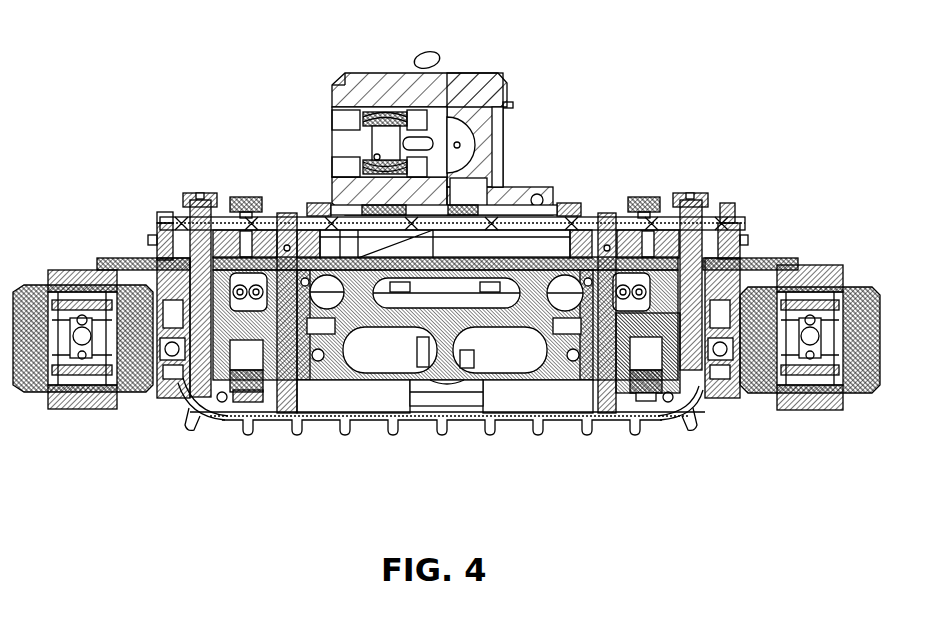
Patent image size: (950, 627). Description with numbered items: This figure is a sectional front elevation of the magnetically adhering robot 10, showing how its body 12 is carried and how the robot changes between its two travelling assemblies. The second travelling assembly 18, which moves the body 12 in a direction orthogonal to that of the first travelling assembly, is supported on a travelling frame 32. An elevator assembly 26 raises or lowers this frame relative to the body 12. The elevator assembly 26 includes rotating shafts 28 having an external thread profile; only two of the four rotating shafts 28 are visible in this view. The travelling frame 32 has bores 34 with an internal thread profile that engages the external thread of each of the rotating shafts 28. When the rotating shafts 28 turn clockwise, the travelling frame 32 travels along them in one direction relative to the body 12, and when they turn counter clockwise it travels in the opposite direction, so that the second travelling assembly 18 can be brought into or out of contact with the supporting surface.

The magnetically adhering robot 10 is at (199, 106).
The body 12 is at (154, 231).
The second travelling assembly 18 is at (306, 443).
The elevator assembly 26 is at (279, 235).
The rotating shafts 28 is at (609, 210).
The travelling frame 32 is at (562, 373).
The bores 34 is at (631, 330).